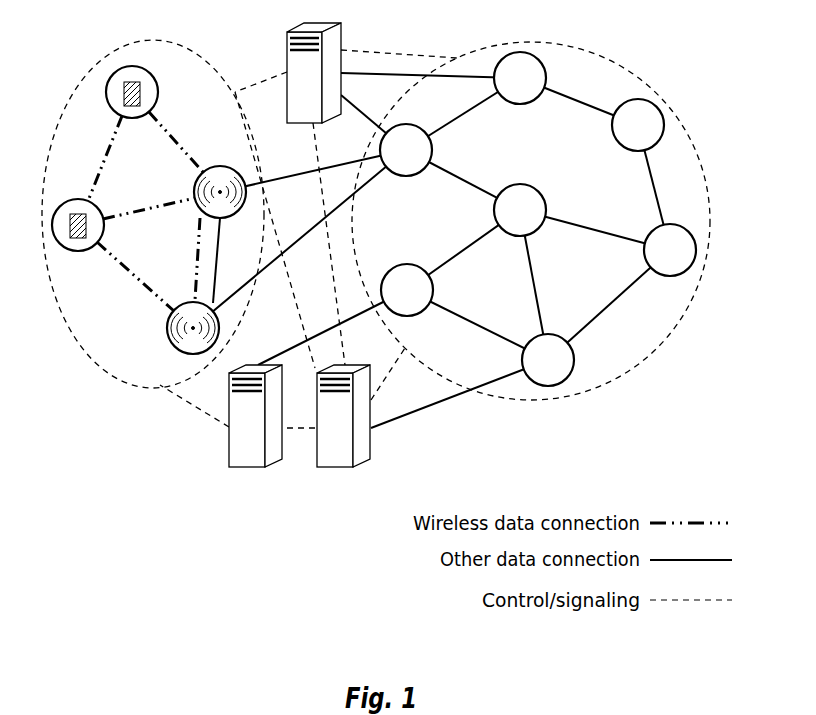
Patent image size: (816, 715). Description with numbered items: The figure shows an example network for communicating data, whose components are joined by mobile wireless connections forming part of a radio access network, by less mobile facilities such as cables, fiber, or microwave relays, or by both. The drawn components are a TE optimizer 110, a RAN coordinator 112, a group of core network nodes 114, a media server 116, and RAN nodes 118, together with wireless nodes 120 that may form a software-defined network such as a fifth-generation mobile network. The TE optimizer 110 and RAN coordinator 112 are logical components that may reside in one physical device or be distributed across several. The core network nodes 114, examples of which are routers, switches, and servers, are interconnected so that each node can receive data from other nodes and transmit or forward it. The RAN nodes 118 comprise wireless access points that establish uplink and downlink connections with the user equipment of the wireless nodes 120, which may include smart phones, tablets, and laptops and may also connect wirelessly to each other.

The TE optimizer 110 is at (343, 468).
The RAN coordinator 112 is at (255, 468).
The core network nodes 114 is at (425, 170).
The media server 116 is at (338, 22).
The RAN nodes 118 is at (220, 163).
The wireless nodes 120 is at (158, 92).